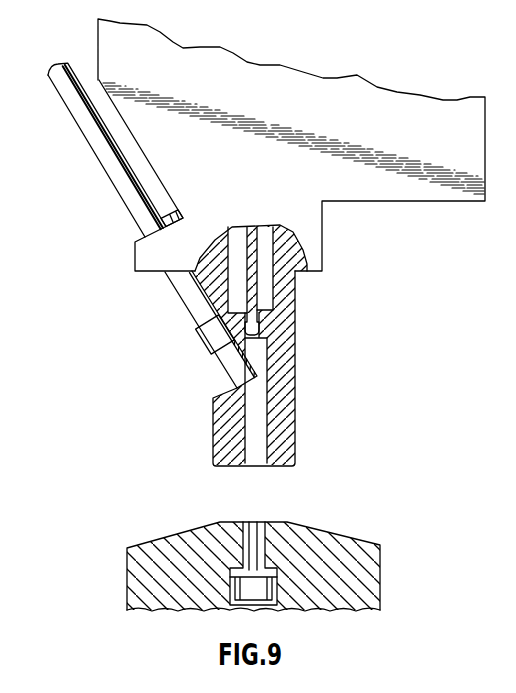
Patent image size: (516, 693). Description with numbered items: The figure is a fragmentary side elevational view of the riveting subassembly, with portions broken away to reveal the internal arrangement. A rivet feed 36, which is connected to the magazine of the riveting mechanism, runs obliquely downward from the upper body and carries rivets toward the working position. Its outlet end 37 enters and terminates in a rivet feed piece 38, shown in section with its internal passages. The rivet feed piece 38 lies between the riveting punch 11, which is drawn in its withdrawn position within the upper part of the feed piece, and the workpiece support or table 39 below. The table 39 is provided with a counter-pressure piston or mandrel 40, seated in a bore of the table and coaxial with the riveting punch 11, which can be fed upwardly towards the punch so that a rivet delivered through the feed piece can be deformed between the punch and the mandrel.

The rivet feed 36 is at (120, 176).
The outlet end 37 is at (235, 368).
The riveting punch 11 is at (253, 298).
The rivet feed piece 38 is at (283, 433).
The workpiece support or table 39 is at (338, 558).
The counter-pressure piston or mandrel 40 is at (253, 538).